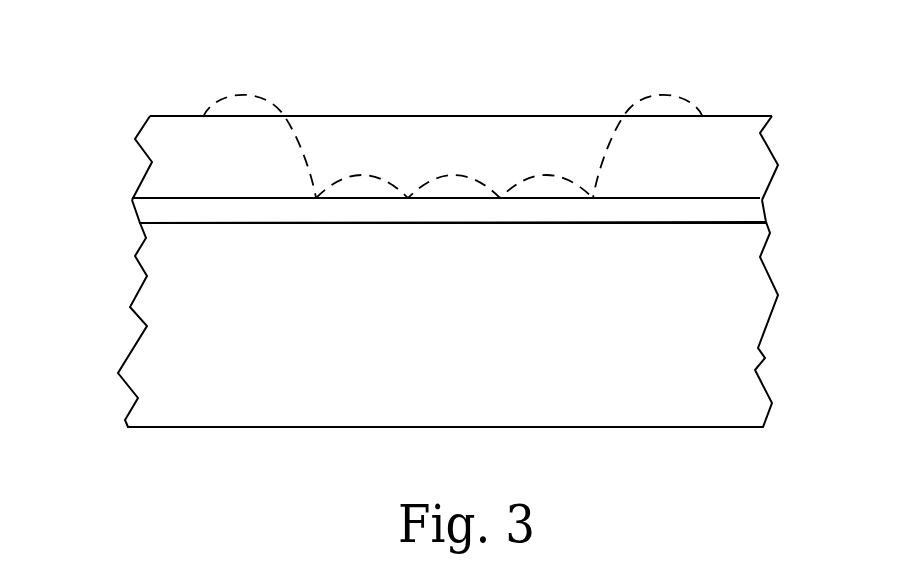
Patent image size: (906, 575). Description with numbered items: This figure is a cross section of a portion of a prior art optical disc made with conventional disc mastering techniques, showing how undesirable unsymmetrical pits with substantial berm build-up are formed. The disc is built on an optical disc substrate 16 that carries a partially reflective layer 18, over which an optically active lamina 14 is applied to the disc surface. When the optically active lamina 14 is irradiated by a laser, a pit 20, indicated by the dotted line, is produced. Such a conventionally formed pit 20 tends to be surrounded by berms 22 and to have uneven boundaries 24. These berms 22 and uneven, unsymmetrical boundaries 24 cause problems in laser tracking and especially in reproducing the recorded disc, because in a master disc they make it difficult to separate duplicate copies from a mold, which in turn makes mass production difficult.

The optically active lamina 14 is at (180, 142).
The optical disc substrate 16 is at (287, 398).
The partially reflective layer 18 is at (173, 212).
The pit 20 is at (452, 105).
The berm 22 is at (230, 95).
The uneven boundary 24 is at (452, 190).